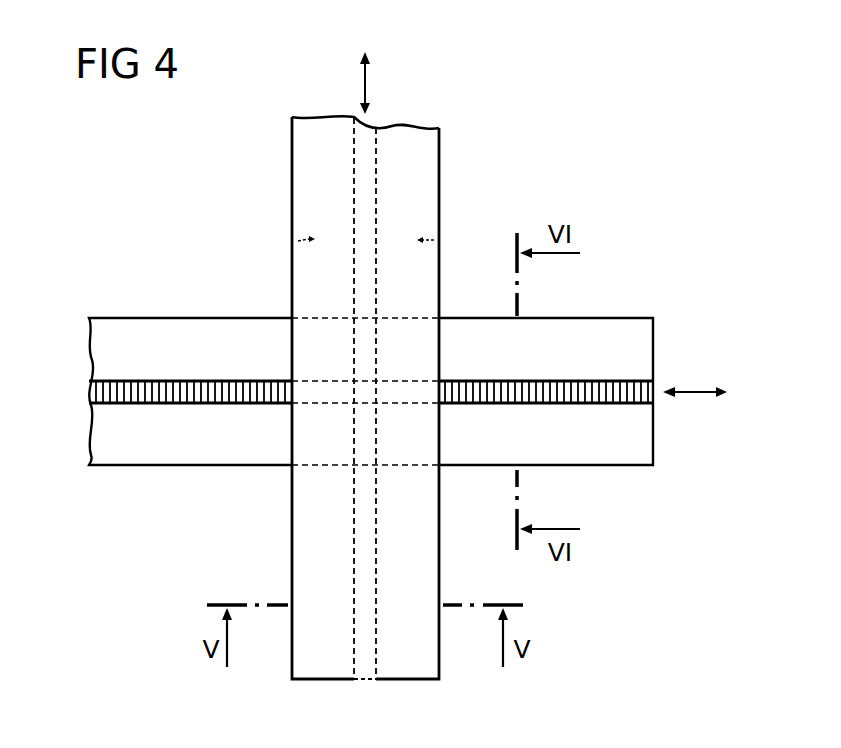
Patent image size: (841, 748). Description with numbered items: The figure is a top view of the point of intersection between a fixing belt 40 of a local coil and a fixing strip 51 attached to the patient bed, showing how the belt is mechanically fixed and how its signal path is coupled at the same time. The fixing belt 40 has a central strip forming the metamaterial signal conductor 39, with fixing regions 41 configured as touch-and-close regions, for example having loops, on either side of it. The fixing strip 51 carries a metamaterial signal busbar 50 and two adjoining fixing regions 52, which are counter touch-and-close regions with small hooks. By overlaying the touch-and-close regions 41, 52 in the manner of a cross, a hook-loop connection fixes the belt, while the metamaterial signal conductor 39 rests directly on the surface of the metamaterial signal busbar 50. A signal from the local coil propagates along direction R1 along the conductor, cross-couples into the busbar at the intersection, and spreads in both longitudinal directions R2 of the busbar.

The metamaterial signal conductor 39 is at (354, 192).
The fixing belt 40 is at (439, 163).
The fixing regions 41 is at (292, 243).
The metamaterial signal busbar 50 is at (197, 380).
The fixing strip 51 is at (632, 467).
The fixing regions 52 is at (116, 327).
The direction R1 is at (366, 83).
The longitudinal directions R2 is at (693, 393).